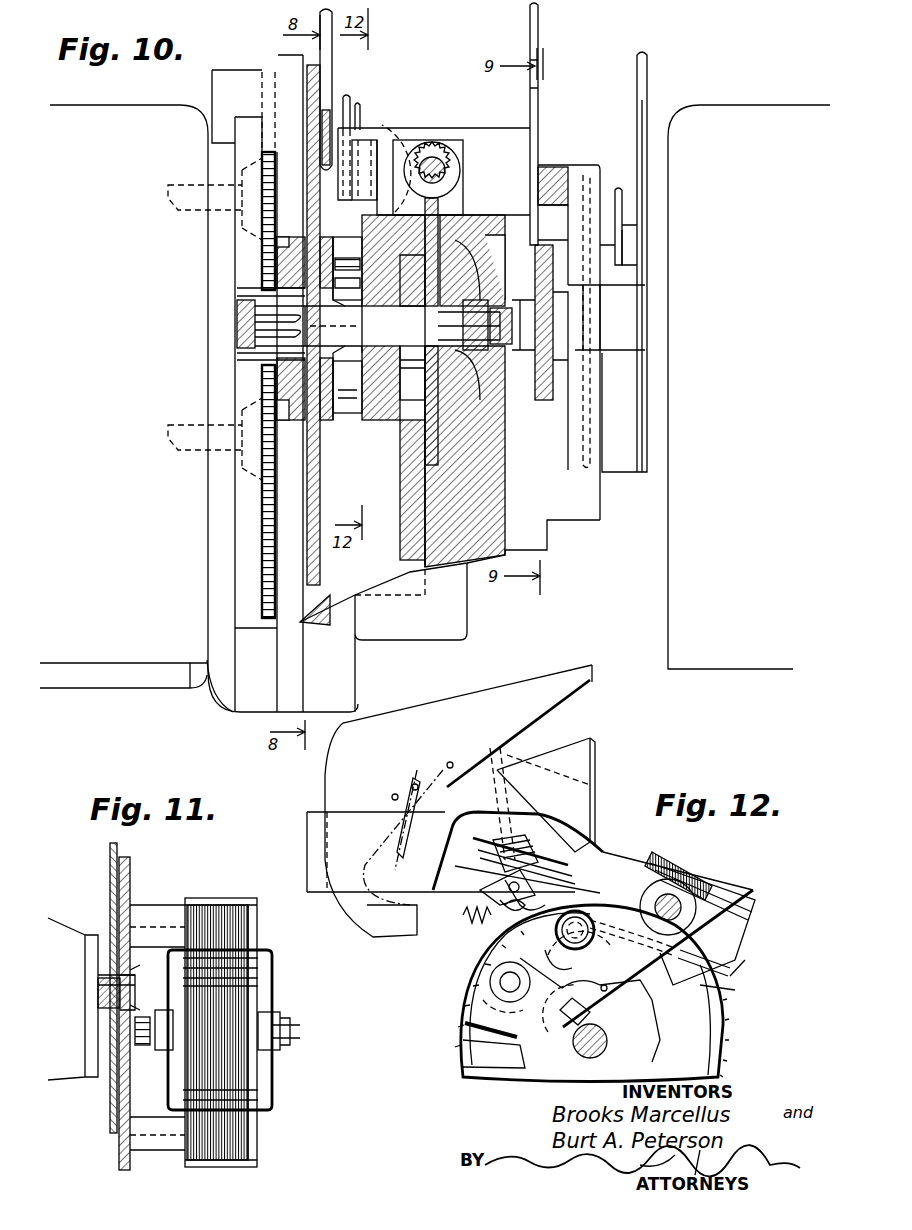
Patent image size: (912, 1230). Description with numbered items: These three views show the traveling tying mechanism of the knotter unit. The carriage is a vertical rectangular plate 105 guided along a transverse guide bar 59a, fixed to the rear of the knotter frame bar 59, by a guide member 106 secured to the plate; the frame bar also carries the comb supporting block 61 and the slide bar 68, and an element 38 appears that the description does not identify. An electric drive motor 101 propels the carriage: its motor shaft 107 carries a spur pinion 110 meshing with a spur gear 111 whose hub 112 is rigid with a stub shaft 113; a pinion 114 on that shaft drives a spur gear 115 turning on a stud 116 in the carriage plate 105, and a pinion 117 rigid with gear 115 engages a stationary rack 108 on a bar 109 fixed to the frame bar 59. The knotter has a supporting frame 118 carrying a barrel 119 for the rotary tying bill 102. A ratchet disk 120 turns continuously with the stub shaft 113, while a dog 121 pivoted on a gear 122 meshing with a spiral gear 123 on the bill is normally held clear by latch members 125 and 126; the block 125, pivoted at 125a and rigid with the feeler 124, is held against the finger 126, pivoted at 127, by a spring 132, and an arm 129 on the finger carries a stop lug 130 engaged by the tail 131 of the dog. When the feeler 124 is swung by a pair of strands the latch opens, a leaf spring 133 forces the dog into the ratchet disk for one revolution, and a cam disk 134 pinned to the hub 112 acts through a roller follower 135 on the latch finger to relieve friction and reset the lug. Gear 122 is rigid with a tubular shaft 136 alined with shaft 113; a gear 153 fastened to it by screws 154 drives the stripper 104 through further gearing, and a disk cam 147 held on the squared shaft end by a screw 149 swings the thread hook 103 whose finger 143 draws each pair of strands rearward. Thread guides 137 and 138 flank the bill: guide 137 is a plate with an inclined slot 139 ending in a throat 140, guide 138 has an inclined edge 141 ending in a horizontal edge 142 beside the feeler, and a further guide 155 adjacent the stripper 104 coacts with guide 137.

In FIG. 10, the frame member 38 is at (775, 115).
In FIG. 10, the knotter frame bar 59 is at (208, 555).
In FIG. 11, the knotter frame bar 59 is at (93, 1080).
In FIG. 10, the transverse guide bar 59a is at (243, 132).
In FIG. 10, the comb supporting block 61 is at (128, 120).
In FIG. 10, the slide bar 68 is at (222, 705).
In FIG. 11, the electric drive motor 101 is at (236, 903).
In FIG. 10, the tying bill 102 is at (438, 160).
In FIG. 12, the tying bill 102 is at (668, 907).
In FIG. 10, the thread hook 103 is at (335, 70).
In FIG. 12, the thread hook 103 is at (396, 794).
In FIG. 10, the stripper 104 is at (619, 190).
In FIG. 10, the carriage plate 105 is at (292, 665).
In FIG. 11, the carriage plate 105 is at (132, 878).
In FIG. 10, the guide member 106 is at (222, 84).
In FIG. 11, the motor shaft 107 is at (278, 1015).
In FIG. 10, the stationary rack 108 is at (262, 390).
In FIG. 10, the rack bar 109 is at (242, 403).
In FIG. 11, the spur pinion 110 is at (142, 1046).
In FIG. 10, the spur gear 111 is at (312, 486).
In FIG. 10, the gear hub 112 is at (350, 418).
In FIG. 10, the stub shaft 113 is at (345, 340).
In FIG. 12, the stub shaft 113 is at (607, 1045).
In FIG. 10, the pinion 114 is at (290, 323).
In FIG. 10, the spur gear 115 is at (290, 272).
In FIG. 11, the spur gear 115 is at (110, 866).
In FIG. 11, the stud 116 is at (100, 989).
In FIG. 10, the pinion 117 is at (290, 300).
In FIG. 11, the pinion 117 is at (105, 972).
In FIG. 10, the knotter supporting frame 118 is at (455, 605).
In FIG. 10, the barrel 119 is at (385, 205).
In FIG. 12, the barrel 119 is at (608, 840).
In FIG. 10, the ratchet disk 120 is at (412, 395).
In FIG. 12, the ratchet disk 120 is at (555, 1075).
In FIG. 12, the dog 121 is at (520, 952).
In FIG. 10, the drive gear 122 is at (435, 436).
In FIG. 12, the drive gear 122 is at (455, 1042).
In FIG. 10, the spiral gear 123 is at (430, 140).
In FIG. 12, the spiral gear 123 is at (700, 866).
In FIG. 10, the feeler 124 is at (360, 112).
In FIG. 12, the feeler 124 is at (510, 812).
In FIG. 12, the latch block 125 is at (530, 841).
In FIG. 12, the pivot 125a is at (495, 898).
In FIG. 12, the latch finger 126 is at (555, 856).
In FIG. 10, the pivot 127 is at (370, 150).
In FIG. 12, the pivot 127 is at (712, 895).
In FIG. 10, the arm 129 is at (402, 282).
In FIG. 12, the arm 129 is at (606, 1000).
In FIG. 10, the stop lug 130 is at (393, 300).
In FIG. 12, the stop lug 130 is at (546, 1030).
In FIG. 12, the dog tail 131 is at (462, 1019).
In FIG. 12, the spring 132 is at (468, 924).
In FIG. 12, the leaf spring 133 is at (722, 1068).
In FIG. 10, the cam disk 134 is at (358, 430).
In FIG. 12, the roller follower 135 is at (594, 915).
In FIG. 10, the tubular shaft 136 is at (494, 360).
In FIG. 10, the thread guide 137 is at (540, 18).
In FIG. 12, the thread guide 137 is at (600, 684).
In FIG. 10, the thread guide 138 is at (350, 105).
In FIG. 12, the thread guide 138 is at (575, 775).
In FIG. 12, the slot 139 is at (452, 762).
In FIG. 12, the throat 140 is at (587, 714).
In FIG. 12, the inclined edge 141 is at (560, 760).
In FIG. 12, the horizontal edge 142 is at (513, 745).
In FIG. 12, the finger 143 is at (408, 826).
In FIG. 10, the disk cam 147 is at (545, 405).
In FIG. 10, the screw 149 is at (575, 360).
In FIG. 10, the gear 153 is at (432, 470).
In FIG. 10, the screws 154 is at (475, 326).
In FIG. 10, the thread guide 155 is at (645, 78).
In FIG. 12, the thread guide 155 is at (525, 748).